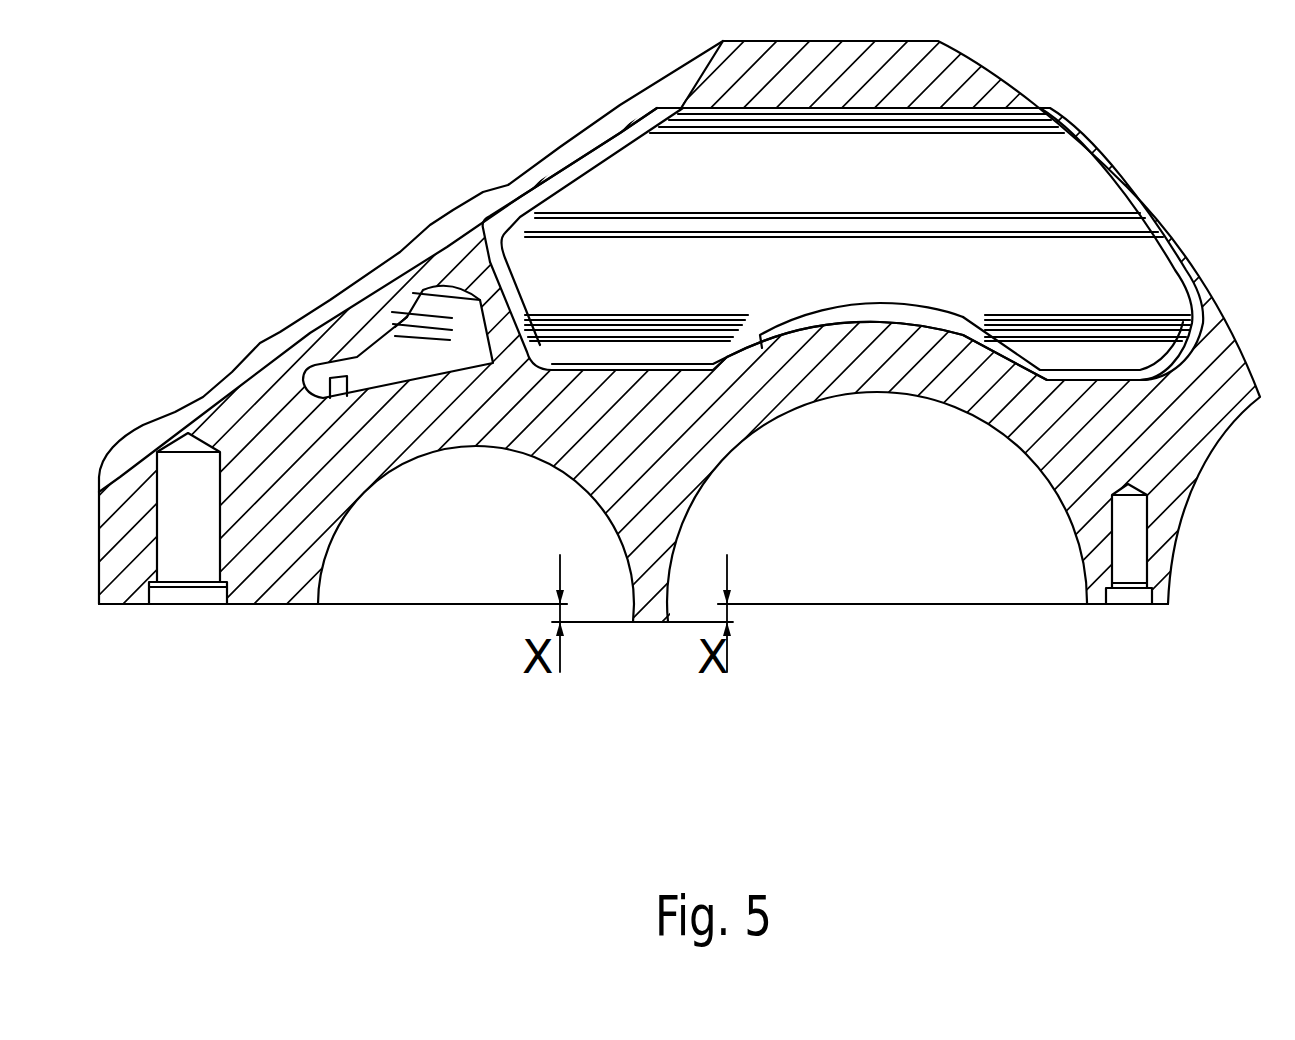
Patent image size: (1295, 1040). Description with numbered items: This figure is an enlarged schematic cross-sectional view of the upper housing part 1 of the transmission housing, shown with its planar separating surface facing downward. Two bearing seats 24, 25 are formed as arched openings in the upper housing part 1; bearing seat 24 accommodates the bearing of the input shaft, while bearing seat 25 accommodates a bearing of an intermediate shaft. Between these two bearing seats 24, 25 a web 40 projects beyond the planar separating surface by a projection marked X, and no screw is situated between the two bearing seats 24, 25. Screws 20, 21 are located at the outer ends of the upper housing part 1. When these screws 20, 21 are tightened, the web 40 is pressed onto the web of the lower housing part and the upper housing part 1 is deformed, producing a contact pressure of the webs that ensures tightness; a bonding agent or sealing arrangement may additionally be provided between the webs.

The upper housing part 1 is at (590, 152).
The screw 20 is at (187, 535).
The screw 21 is at (1127, 545).
The bearing seat 24 is at (435, 502).
The bearing seat 25 is at (940, 450).
The projecting web 40 is at (644, 624).